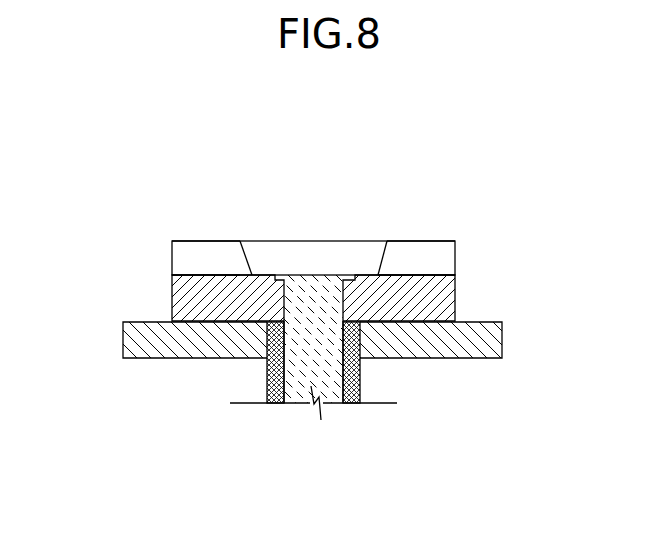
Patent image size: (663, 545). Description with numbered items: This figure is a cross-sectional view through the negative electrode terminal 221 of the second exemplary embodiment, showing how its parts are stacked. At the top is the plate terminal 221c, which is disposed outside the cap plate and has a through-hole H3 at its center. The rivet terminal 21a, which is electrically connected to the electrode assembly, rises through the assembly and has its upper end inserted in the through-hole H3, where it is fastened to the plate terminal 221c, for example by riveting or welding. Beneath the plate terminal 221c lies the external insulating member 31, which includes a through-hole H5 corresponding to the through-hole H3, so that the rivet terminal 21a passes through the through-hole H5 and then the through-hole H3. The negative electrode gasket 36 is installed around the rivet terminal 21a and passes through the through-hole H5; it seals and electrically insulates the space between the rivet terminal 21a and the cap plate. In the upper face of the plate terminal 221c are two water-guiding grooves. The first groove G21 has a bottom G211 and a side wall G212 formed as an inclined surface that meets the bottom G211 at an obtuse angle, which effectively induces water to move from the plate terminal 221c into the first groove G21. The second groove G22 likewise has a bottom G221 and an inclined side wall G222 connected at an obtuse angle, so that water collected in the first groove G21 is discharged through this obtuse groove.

The negative electrode terminal 221 is at (266, 188).
The second groove G22 is at (213, 177).
The bottom of the second groove G221 is at (188, 275).
The side wall of the second groove G222 is at (205, 257).
The first groove G21 is at (422, 172).
The bottom of the first groove G211 is at (357, 275).
The side wall of the first groove G212 is at (381, 253).
The plate terminal 221c is at (190, 290).
The through-hole H3 is at (342, 308).
The rivet terminal 21a is at (300, 377).
The external insulating member 31 is at (142, 338).
The negative electrode gasket 36 is at (273, 373).
The through-hole H5 is at (360, 373).